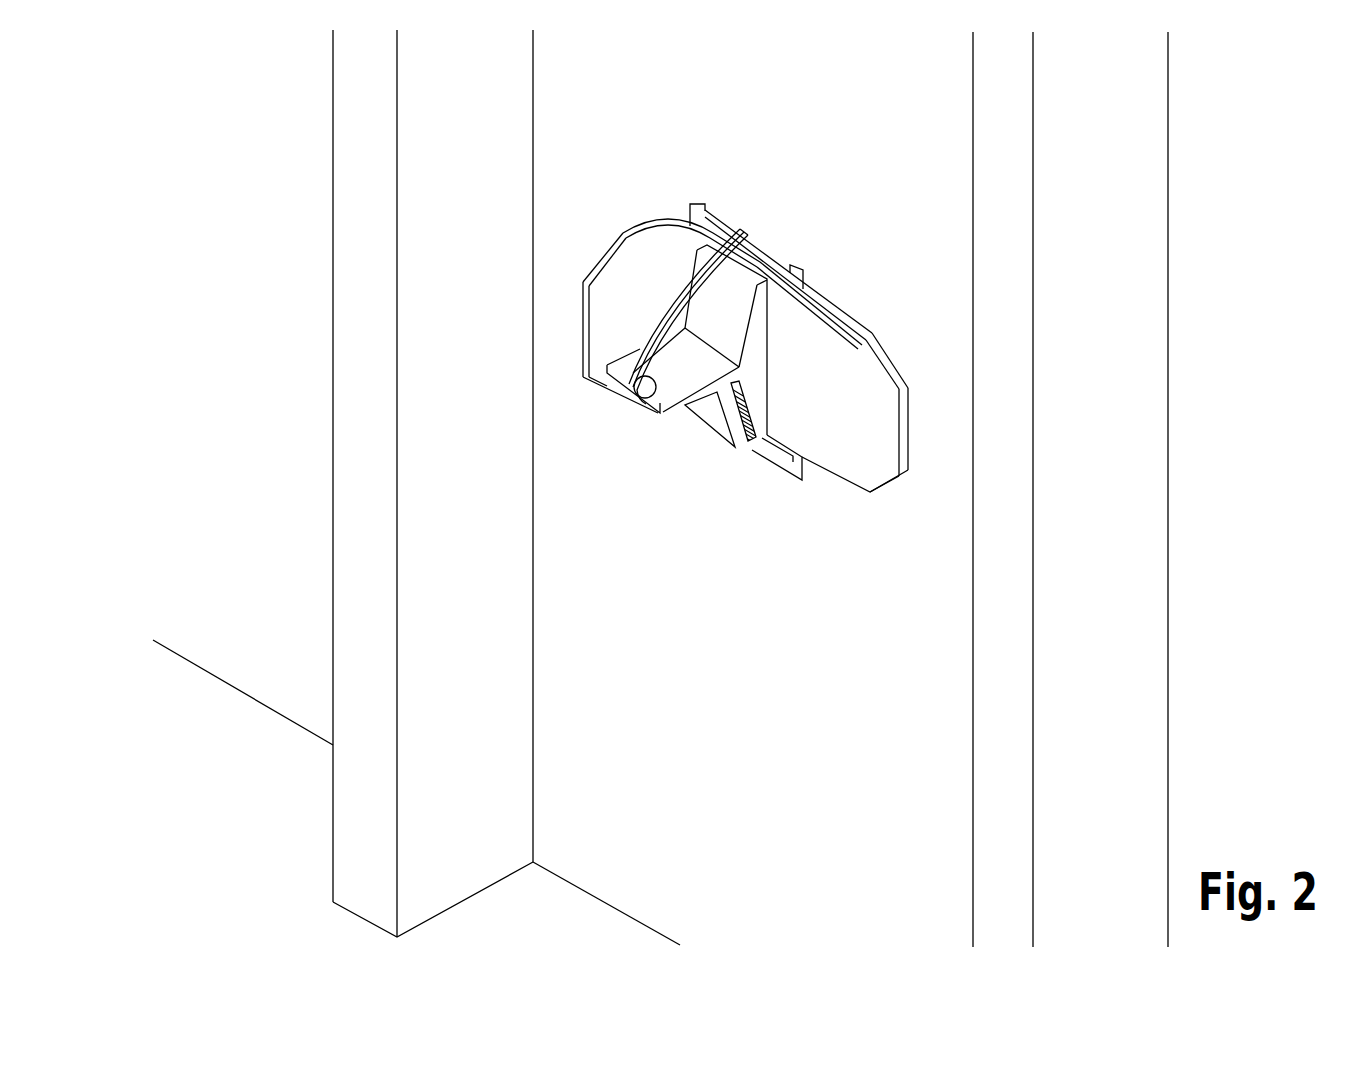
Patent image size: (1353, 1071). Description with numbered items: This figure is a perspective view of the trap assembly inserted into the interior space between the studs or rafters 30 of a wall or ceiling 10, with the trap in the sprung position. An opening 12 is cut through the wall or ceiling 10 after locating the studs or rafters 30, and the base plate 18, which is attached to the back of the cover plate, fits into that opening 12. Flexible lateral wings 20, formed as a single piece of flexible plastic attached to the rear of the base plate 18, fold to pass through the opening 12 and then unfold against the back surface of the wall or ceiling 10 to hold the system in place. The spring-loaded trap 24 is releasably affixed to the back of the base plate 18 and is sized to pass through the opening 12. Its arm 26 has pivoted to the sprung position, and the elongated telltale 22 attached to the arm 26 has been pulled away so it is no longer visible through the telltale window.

The wall or ceiling 10 is at (870, 156).
The opening 12 is at (700, 203).
The base plate 18 is at (787, 258).
The flexible lateral wings 20 is at (625, 227).
The elongated telltale 22 is at (638, 407).
The spring-loaded trap 24 is at (760, 457).
The arm 26 is at (685, 410).
The studs or rafters 30 is at (333, 225).